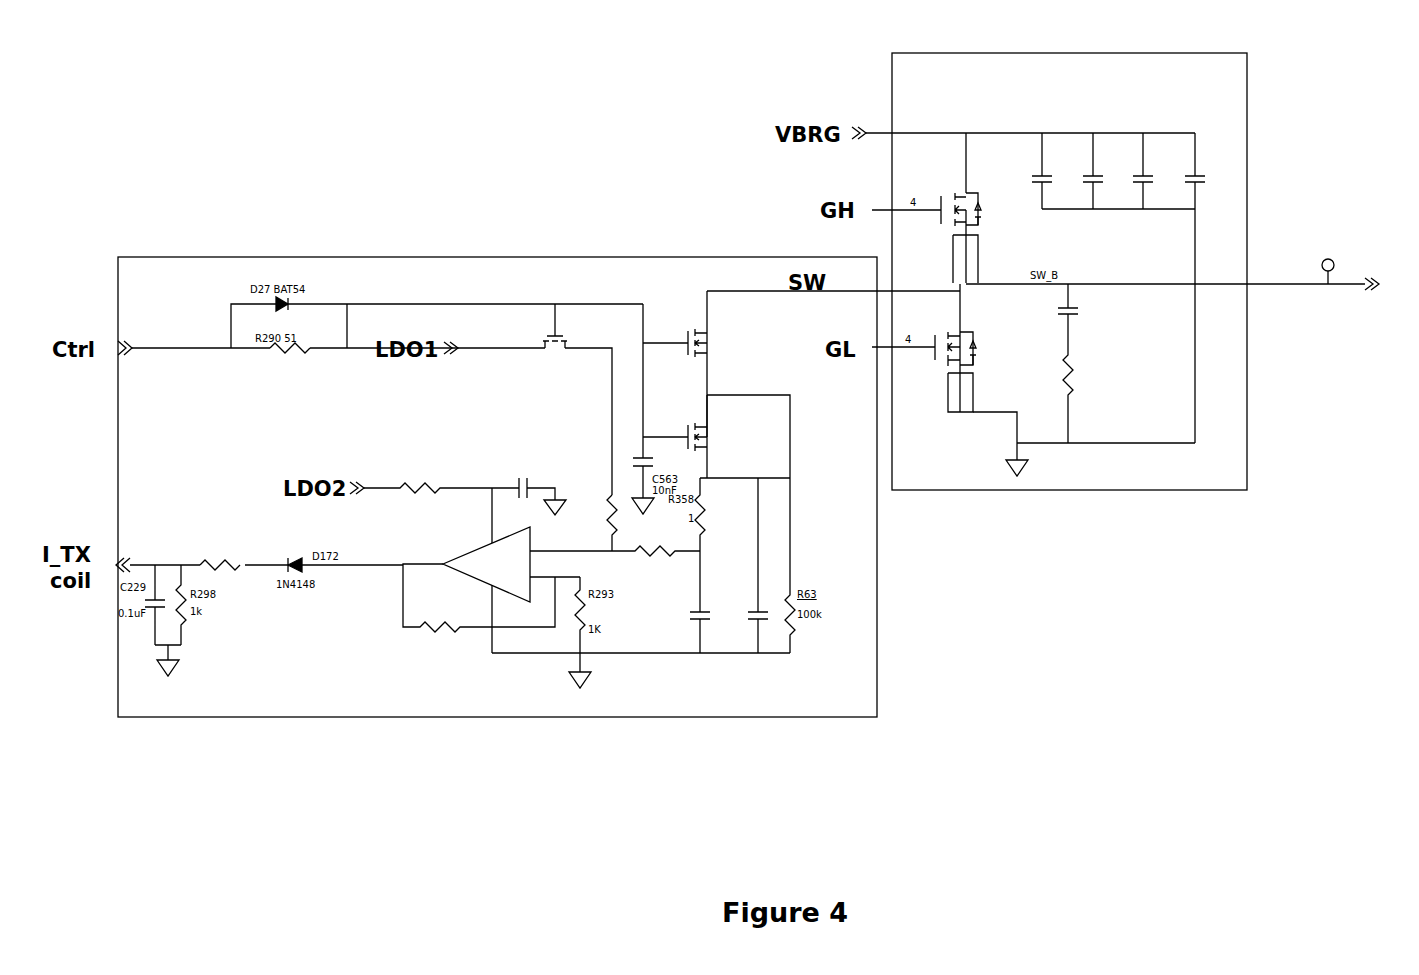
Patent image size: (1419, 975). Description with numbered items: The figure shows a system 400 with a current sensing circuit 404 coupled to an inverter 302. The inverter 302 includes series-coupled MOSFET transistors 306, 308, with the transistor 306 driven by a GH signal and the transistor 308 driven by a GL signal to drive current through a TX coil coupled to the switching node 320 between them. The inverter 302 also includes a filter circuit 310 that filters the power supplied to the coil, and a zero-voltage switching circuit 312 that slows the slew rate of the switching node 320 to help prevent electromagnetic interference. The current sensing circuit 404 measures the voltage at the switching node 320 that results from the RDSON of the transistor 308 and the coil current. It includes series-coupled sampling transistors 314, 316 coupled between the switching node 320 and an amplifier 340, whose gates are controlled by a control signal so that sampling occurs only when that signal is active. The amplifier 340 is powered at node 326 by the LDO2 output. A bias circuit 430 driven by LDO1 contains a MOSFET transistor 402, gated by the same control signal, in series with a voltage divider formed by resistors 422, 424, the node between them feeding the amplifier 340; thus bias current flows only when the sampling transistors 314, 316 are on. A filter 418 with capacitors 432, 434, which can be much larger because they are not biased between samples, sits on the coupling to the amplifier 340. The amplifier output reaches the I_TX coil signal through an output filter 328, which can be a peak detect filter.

The system 400 is at (145, 78).
The current sensing circuit 404 is at (497, 487).
The inverter 302 is at (1069, 271).
The transistor 306 is at (965, 197).
The transistor 308 is at (957, 352).
The filter circuit 310 is at (1130, 200).
The zero-voltage switching circuit 312 is at (1067, 333).
The sampling transistor 314 is at (708, 340).
The sampling transistor 316 is at (690, 435).
The switching node 320 is at (1359, 290).
The transistor 402 is at (562, 335).
The bias circuit 430 is at (602, 360).
The node 326 is at (490, 484).
The resistor 424 is at (620, 498).
The filter 418 is at (735, 553).
The resistor 422 is at (640, 556).
The capacitor 432 is at (698, 618).
The capacitor 434 is at (752, 630).
The output filter 328 is at (207, 542).
The amplifier 340 is at (500, 567).